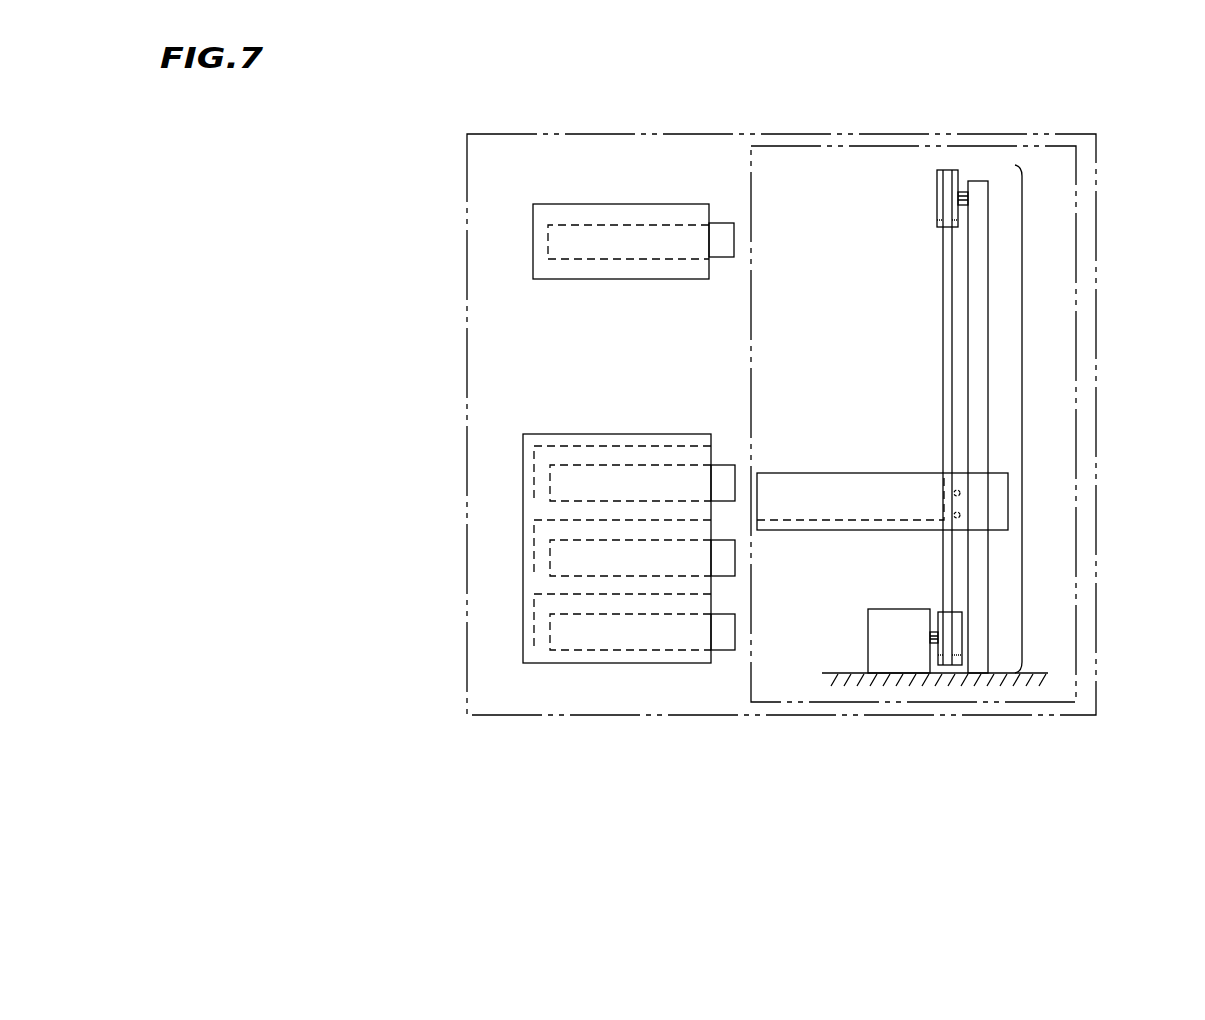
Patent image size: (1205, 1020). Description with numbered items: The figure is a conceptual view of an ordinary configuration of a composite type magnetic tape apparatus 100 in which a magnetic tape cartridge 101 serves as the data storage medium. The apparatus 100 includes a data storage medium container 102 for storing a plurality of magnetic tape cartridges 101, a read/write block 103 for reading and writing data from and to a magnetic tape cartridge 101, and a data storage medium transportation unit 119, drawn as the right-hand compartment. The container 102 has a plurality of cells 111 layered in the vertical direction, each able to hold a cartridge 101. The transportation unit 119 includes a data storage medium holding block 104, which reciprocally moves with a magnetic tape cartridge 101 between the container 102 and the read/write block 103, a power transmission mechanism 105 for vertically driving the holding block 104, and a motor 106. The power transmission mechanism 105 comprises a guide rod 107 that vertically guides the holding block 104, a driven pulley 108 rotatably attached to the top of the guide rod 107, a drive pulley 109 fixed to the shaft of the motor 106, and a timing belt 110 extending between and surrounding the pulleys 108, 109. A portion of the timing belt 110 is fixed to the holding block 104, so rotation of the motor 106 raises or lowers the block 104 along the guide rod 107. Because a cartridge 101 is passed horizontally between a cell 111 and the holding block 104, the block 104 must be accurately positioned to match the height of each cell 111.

The composite type magnetic tape apparatus 100 is at (465, 240).
The magnetic tape cartridge 101 is at (722, 258).
The data storage medium container 102 is at (523, 443).
The read/write block 103 is at (620, 212).
The data storage medium holding block 104 is at (826, 473).
The power transmission mechanism 105 is at (1022, 376).
The motor 106 is at (896, 610).
The guide rod 107 is at (978, 257).
The driven pulley 108 is at (937, 200).
The drive pulley 109 is at (945, 673).
The timing belt 110 is at (945, 330).
The cell 111 is at (542, 478).
The data storage medium transportation unit 119 is at (1076, 264).